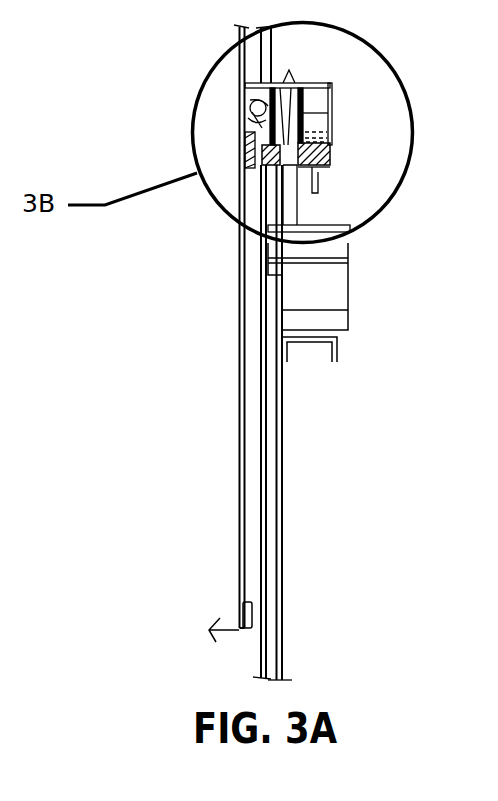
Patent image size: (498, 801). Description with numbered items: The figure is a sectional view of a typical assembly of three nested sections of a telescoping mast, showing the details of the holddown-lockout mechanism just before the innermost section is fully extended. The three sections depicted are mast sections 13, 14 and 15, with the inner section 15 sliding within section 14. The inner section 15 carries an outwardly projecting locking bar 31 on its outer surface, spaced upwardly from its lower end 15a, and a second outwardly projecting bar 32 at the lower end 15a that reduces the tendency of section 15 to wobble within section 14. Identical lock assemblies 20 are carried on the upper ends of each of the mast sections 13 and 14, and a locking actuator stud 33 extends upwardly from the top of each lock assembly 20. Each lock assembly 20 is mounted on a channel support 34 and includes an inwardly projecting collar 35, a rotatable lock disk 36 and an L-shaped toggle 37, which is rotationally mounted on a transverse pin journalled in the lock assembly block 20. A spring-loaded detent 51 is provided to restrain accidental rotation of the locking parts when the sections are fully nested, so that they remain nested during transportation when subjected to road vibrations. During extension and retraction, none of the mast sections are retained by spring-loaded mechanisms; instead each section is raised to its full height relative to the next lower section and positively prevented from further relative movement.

The mast section 13 is at (280, 648).
The mast section 14 is at (265, 598).
The inner section 15 is at (245, 552).
The lower end 15a is at (234, 630).
The lock assembly 20 is at (333, 88).
The locking bar 31 is at (243, 152).
The second outwardly projecting bar 32 is at (242, 615).
The locking actuator stud 33 is at (272, 57).
The channel support 34 is at (320, 188).
The collar 35 is at (255, 99).
The lock disk 36 is at (330, 150).
The L-shaped toggle 37 is at (252, 118).
The spring-loaded detent 51 is at (337, 138).